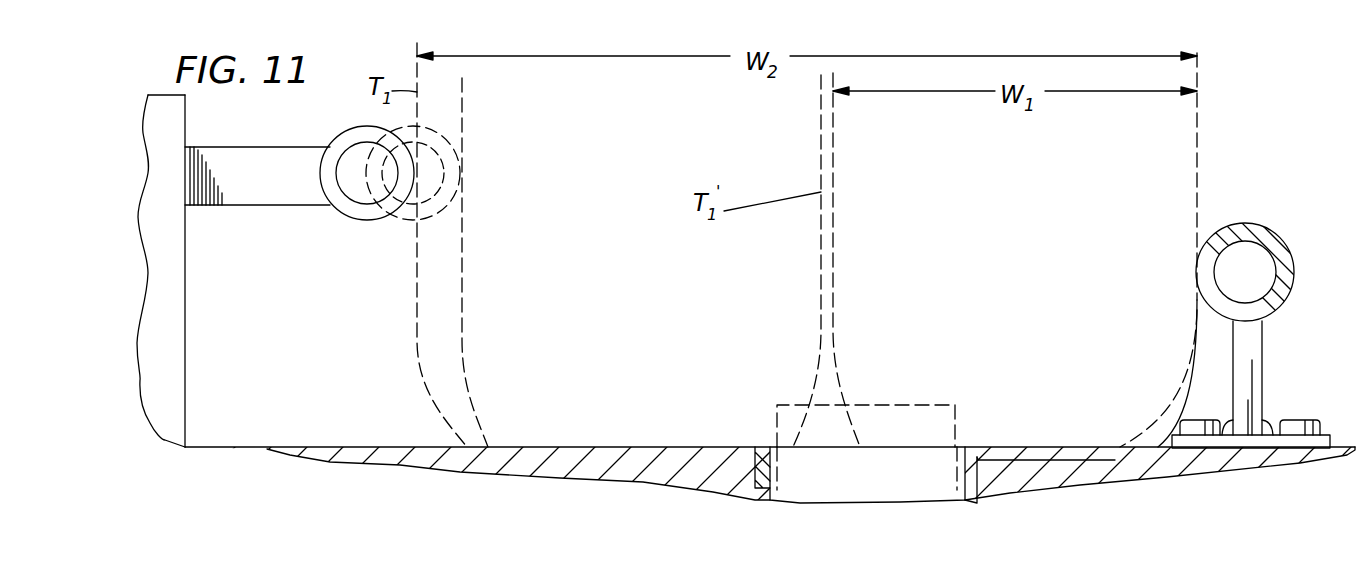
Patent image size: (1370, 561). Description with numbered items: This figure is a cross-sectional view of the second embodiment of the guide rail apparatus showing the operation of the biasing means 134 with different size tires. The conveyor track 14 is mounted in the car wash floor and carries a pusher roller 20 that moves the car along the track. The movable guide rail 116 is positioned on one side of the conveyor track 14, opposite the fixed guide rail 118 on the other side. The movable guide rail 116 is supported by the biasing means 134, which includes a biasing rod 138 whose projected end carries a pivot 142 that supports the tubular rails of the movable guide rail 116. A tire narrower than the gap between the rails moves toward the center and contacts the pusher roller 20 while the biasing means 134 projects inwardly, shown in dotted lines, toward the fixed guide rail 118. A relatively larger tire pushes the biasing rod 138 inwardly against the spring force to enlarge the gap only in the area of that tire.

The conveyor track 14 is at (675, 497).
The pusher roller 20 is at (831, 428).
The movable guide rail 116 is at (298, 271).
The fixed guide rail 118 is at (1318, 185).
The biasing means 134 is at (230, 340).
The biasing rod 138 is at (261, 196).
The pivot 142 is at (338, 137).